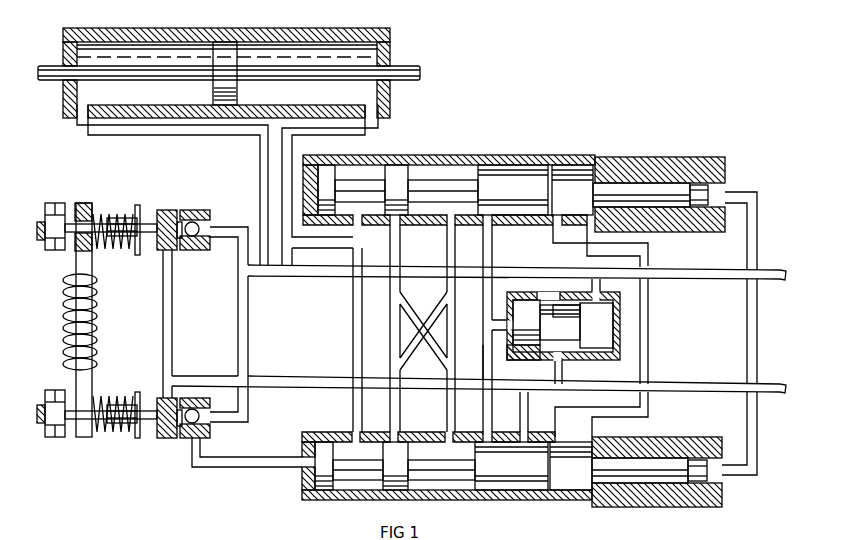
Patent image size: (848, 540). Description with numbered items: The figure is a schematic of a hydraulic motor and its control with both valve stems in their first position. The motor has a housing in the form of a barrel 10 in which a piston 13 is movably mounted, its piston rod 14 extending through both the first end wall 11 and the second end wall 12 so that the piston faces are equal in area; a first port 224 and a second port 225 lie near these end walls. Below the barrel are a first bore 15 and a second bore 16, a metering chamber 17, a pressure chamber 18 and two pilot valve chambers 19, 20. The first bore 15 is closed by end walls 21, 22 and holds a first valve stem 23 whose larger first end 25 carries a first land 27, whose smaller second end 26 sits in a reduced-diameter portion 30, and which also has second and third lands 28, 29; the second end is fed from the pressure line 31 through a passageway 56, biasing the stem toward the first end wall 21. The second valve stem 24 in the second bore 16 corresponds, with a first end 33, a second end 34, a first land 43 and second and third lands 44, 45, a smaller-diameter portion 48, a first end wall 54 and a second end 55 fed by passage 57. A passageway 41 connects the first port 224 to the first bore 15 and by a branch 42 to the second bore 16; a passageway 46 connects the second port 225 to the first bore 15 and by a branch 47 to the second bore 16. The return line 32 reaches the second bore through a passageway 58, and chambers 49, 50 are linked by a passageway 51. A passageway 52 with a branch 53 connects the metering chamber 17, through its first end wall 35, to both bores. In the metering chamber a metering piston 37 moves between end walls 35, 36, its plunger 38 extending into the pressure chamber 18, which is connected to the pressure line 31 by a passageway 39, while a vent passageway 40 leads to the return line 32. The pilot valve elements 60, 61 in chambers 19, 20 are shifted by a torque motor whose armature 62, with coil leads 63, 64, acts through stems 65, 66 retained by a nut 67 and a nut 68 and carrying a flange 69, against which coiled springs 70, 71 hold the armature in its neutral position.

The barrel 10 is at (196, 26).
The first end wall 11 is at (63, 31).
The second end wall 12 is at (390, 44).
The piston 13 is at (225, 73).
The piston rod 14 is at (421, 70).
The first bore 15 is at (641, 148).
The second bore 16 is at (678, 508).
The metering chamber 17 is at (506, 294).
The pressure chamber 18 is at (620, 345).
The first pilot valve chamber 19 is at (209, 218).
The second pilot valve chamber 20 is at (210, 430).
The first end wall of first bore 21 is at (308, 168).
The second end wall of first bore 22 is at (726, 162).
The first valve stem 23 is at (451, 168).
The second valve stem 24 is at (462, 480).
The first end of first stem 25 is at (322, 166).
The second end of first stem 26 is at (700, 186).
The first land 27 is at (348, 168).
The second land 28 is at (390, 168).
The third land 29 is at (520, 182).
The reduced-diameter portion 30 is at (660, 157).
The pressure line 31 is at (772, 274).
The return line 32 is at (772, 384).
The first end of second stem 33 is at (304, 452).
The second end of second stem 34 is at (702, 484).
The first end wall of metering chamber 35 is at (508, 350).
The second end wall of metering chamber 36 is at (556, 304).
The metering piston 37 is at (527, 312).
The plunger 38 is at (560, 322).
The passageway 39 is at (606, 289).
The passageway 40 is at (566, 370).
The passageway 41 is at (82, 129).
The branch 42 is at (405, 332).
The spool land 43 is at (334, 490).
The second land of second stem 44 is at (410, 490).
The third land of second stem 45 is at (515, 472).
The passageway 46 is at (378, 133).
The branch 47 is at (488, 342).
The smaller-diameter portion 48 is at (622, 506).
The first bore chamber 49 is at (575, 172).
The second bore chamber 50 is at (570, 486).
The passageway 51 is at (650, 322).
The passageway 52 is at (490, 372).
The branch 53 is at (560, 270).
The first end wall of second bore 54 is at (304, 486).
The second end of second bore 55 is at (722, 495).
The passageway 56 is at (760, 210).
The passageway 57 is at (760, 338).
The passageway 58 is at (620, 427).
The first pilot valve element 60 is at (193, 240).
The second pilot valve element 61 is at (188, 424).
The armature 62 is at (86, 204).
The coil lead 63 is at (45, 370).
The coil lead 64 is at (57, 286).
The stem 65 is at (40, 224).
The stem 66 is at (40, 424).
The nut 67 is at (55, 204).
The lock nut 68 is at (53, 438).
The flange 69 is at (141, 208).
The coiled spring 70 is at (114, 215).
The spring 71 is at (118, 432).
The first port 224 is at (83, 110).
The second port 225 is at (366, 110).